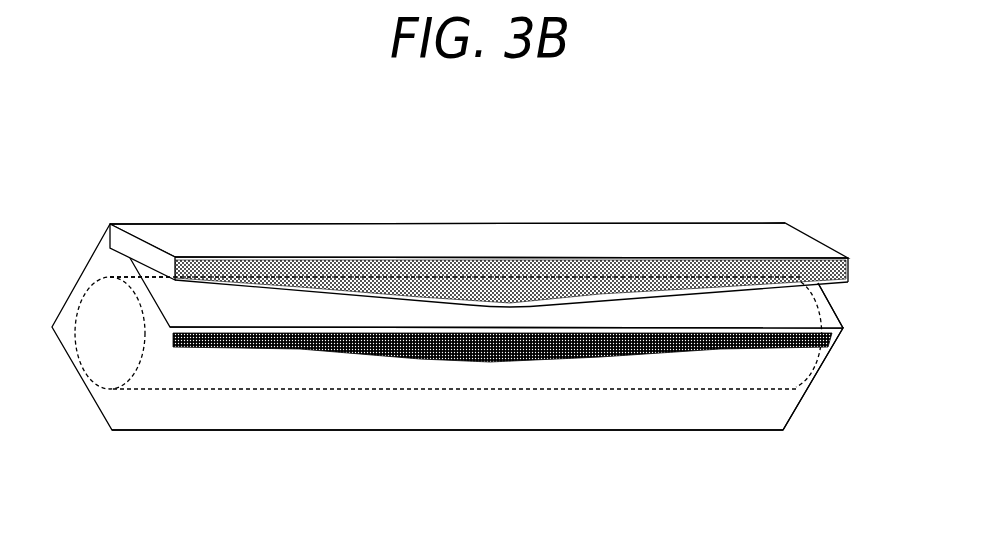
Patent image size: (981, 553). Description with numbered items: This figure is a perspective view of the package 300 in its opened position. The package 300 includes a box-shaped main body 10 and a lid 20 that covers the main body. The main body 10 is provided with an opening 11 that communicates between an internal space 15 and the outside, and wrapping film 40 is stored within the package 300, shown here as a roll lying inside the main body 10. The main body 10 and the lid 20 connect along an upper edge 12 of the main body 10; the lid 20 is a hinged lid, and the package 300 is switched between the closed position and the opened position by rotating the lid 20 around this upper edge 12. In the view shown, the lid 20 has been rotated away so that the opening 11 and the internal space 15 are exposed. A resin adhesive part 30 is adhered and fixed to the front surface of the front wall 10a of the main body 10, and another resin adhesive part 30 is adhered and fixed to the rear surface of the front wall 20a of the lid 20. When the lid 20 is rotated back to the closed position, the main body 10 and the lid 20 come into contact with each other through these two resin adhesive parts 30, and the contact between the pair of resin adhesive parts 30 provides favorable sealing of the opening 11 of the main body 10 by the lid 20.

The package 300 is at (473, 288).
The main body 10 is at (473, 352).
The front wall of the main body 10a is at (248, 413).
The opening 11 is at (832, 299).
The upper edge 12 is at (465, 223).
The internal space 15 is at (717, 305).
The lid 20 is at (479, 226).
The front wall of the lid 20a is at (700, 260).
The resin adhesive part 30 is at (455, 350).
The wrapping film 40 is at (100, 358).